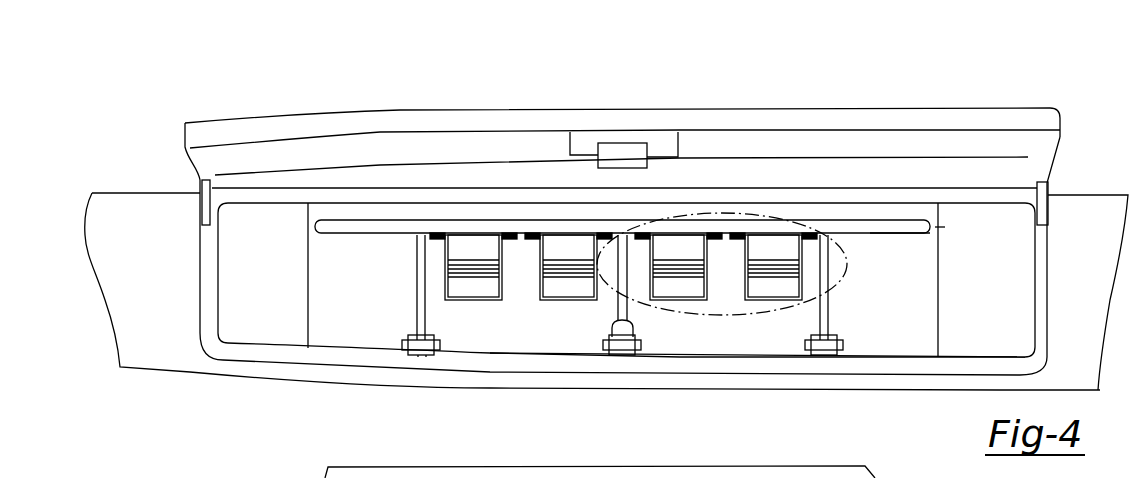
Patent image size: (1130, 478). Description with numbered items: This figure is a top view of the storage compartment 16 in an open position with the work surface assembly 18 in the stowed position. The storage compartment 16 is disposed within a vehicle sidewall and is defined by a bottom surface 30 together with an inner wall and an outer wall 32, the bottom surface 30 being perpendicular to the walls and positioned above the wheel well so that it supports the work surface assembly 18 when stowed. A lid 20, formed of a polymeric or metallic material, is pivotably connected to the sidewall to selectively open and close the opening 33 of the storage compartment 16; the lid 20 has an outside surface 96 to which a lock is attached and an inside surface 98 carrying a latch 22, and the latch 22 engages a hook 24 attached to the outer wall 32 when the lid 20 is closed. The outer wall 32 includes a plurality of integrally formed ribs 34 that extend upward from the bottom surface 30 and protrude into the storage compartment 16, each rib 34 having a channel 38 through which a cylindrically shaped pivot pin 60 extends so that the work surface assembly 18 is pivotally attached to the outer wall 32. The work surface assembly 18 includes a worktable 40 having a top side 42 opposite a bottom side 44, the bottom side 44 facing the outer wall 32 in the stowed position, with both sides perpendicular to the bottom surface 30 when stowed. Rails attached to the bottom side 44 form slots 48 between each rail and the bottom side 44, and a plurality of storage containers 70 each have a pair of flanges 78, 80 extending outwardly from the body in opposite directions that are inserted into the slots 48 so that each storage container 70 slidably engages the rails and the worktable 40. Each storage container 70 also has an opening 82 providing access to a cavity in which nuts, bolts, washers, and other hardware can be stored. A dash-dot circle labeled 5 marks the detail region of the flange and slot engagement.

The storage compartment 16 is at (636, 211).
The work surface assembly 18 is at (477, 343).
The lid 20 is at (608, 216).
The latch 22 is at (680, 143).
The hook 24 is at (612, 328).
The bottom surface 30 is at (318, 278).
The outer wall 32 is at (690, 357).
The opening 33 is at (1047, 258).
The rib 34 is at (417, 330).
The channel 38 is at (423, 355).
The worktable 40 is at (942, 227).
The top side 42 is at (898, 220).
The bottom side 44 is at (896, 237).
The slot 48 is at (379, 477).
The detail area of FIG. 5 is at (845, 283).
The pivot pin 60 is at (402, 345).
The storage container 70 is at (450, 235).
The flange 78 is at (406, 477).
The flange 80 is at (541, 477).
The opening 82 is at (487, 477).
The outside surface 96 is at (398, 110).
The inside surface 98 is at (790, 140).